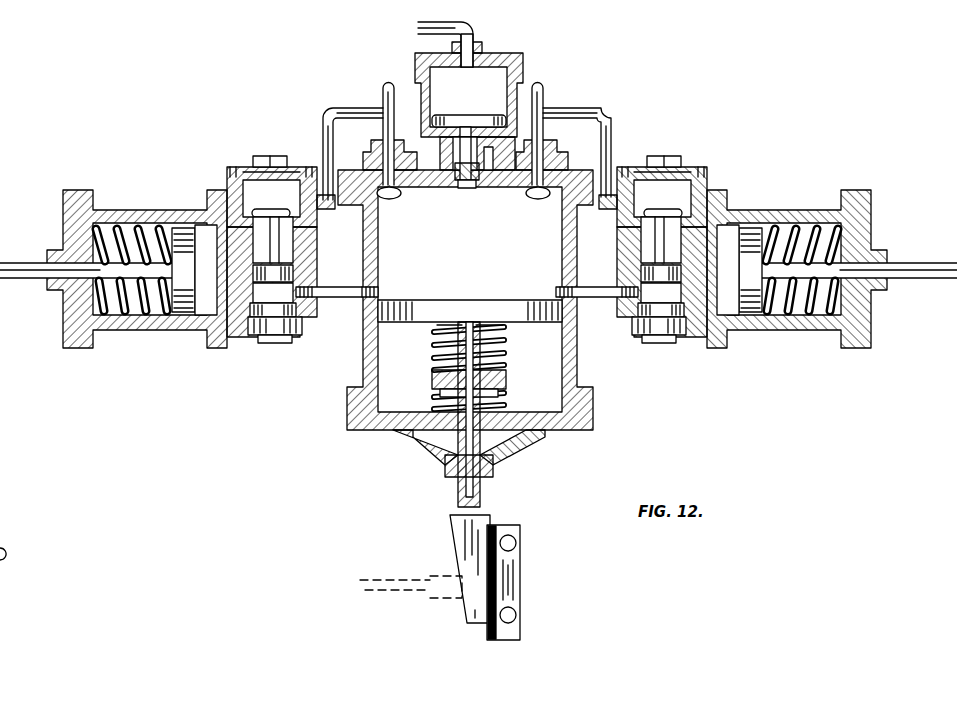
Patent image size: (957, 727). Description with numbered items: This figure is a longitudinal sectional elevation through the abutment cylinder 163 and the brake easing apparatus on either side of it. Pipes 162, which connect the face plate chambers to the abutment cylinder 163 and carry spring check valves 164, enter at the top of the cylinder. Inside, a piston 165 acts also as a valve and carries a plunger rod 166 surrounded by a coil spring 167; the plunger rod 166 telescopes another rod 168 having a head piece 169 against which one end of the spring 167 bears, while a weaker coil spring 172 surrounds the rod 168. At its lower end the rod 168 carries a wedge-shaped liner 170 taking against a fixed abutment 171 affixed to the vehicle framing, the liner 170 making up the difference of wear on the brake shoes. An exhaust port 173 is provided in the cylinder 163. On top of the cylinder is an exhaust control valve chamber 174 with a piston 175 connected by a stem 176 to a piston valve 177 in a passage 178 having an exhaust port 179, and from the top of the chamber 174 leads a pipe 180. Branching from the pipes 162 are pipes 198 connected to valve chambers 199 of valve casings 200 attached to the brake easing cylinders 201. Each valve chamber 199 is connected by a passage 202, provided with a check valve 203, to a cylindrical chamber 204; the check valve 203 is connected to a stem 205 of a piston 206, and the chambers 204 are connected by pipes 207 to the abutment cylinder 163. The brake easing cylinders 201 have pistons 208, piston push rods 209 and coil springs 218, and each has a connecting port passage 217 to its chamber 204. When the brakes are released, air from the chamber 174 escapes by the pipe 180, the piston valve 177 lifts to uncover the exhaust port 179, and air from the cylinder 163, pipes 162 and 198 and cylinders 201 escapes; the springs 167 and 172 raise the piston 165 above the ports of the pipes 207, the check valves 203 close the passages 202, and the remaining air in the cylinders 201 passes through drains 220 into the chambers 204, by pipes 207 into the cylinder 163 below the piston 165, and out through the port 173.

The pipe 162 is at (383, 95).
The abutment cylinder 163 is at (465, 300).
The spring check valve 164 is at (389, 199).
The piston 165 is at (470, 311).
The plunger rod 166 is at (440, 336).
The coil spring 167 is at (505, 353).
The rod 168 is at (505, 442).
The head piece 169 is at (432, 383).
The wedge-shaped liner 170 is at (458, 553).
The fixed abutment 171 is at (516, 582).
The coil spring 172 is at (505, 400).
The exhaust port 173 is at (420, 450).
The exhaust control valve chamber 174 is at (523, 75).
The piston 175 is at (474, 115).
The stem 176 is at (452, 143).
The piston valve 177 is at (462, 190).
The passage 178 is at (480, 128).
The exhaust port 179 is at (497, 188).
The pipe 180 is at (425, 33).
The pipe 198 is at (324, 118).
The valve chamber 199 is at (467, 204).
The valve casing 200 is at (235, 182).
The brake easing cylinder 201 is at (137, 212).
The passage 202 is at (313, 238).
The check valve 203 is at (318, 215).
The cylindrical chamber 204 is at (467, 293).
The stem 205 is at (313, 258).
The piston 206 is at (313, 278).
The pipe 207 is at (330, 300).
The piston 208 is at (465, 270).
The piston push rod 209 is at (30, 263).
The connecting port passage 217 is at (228, 238).
The coil spring 218 is at (146, 330).
The drain 220 is at (256, 338).